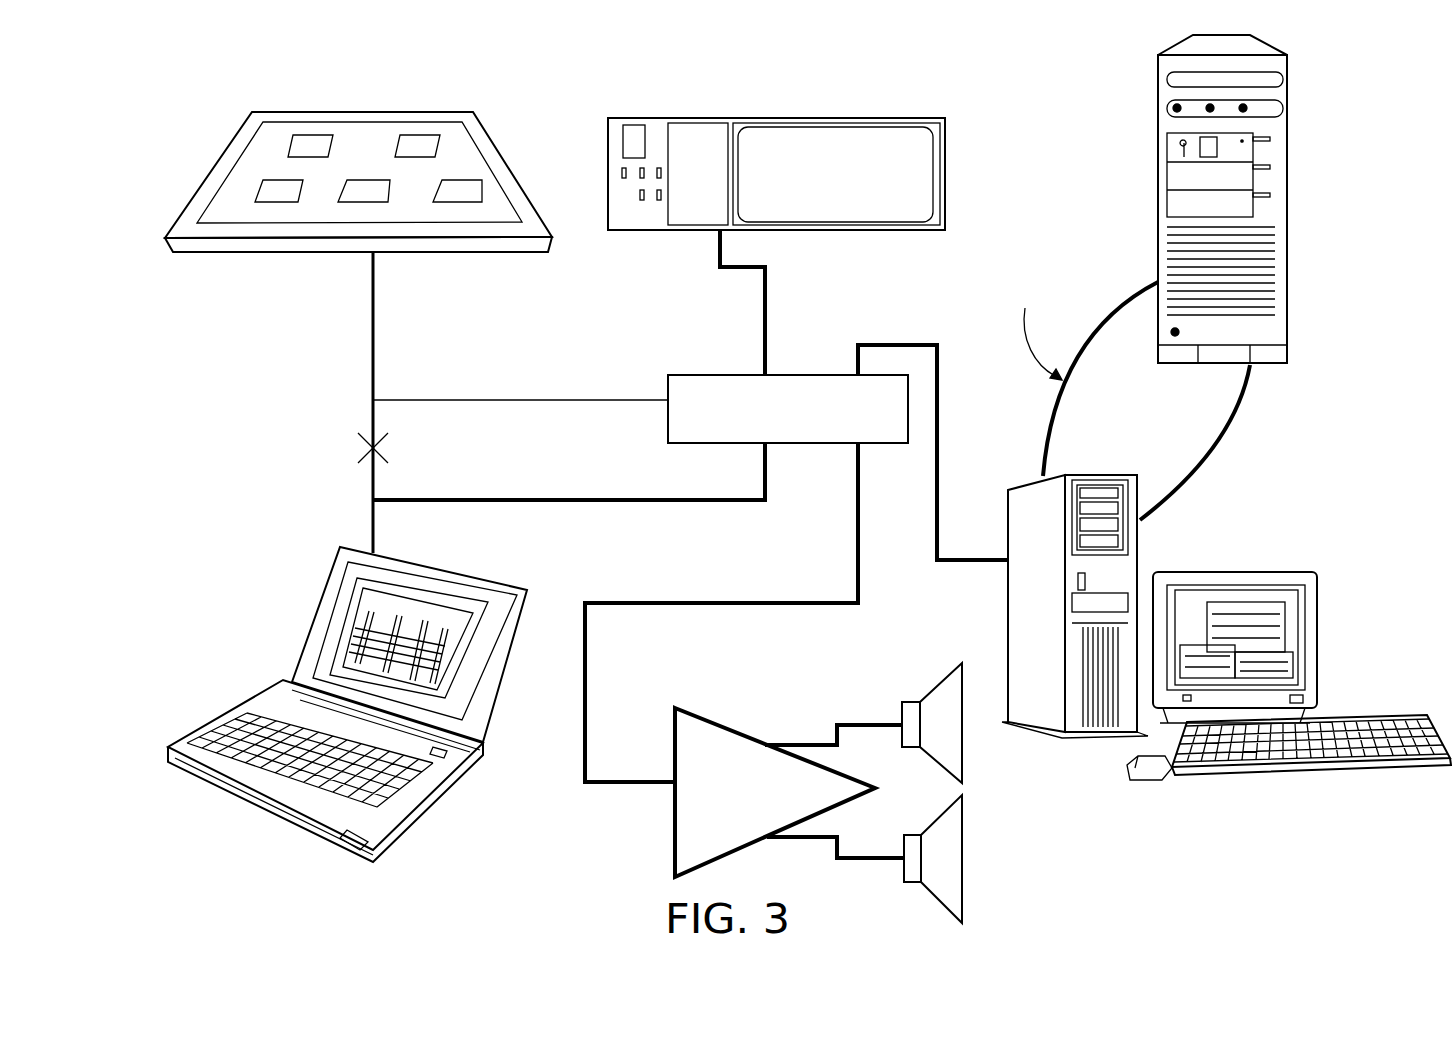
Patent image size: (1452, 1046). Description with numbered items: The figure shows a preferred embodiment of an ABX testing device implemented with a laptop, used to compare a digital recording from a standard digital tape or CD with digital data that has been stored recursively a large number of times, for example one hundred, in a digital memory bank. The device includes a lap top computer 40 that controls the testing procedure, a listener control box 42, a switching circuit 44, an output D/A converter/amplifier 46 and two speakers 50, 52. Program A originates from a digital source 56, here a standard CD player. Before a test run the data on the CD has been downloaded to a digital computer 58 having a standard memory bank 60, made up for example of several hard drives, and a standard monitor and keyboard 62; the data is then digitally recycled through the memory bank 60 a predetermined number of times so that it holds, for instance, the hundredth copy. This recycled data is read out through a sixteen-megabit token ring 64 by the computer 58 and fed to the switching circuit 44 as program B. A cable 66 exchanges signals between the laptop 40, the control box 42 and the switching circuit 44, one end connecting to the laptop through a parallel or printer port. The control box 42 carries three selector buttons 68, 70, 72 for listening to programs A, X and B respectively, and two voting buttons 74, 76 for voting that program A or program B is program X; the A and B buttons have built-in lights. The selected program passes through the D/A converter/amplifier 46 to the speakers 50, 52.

The lap top computer 40 is at (495, 578).
The listener control box 42 is at (371, 214).
The switching circuit 44 is at (705, 375).
The output D/A converter/amplifier 46 is at (710, 723).
The speaker 50 is at (962, 753).
The speaker 52 is at (962, 868).
The digital source 56 is at (845, 186).
The digital computer 58 is at (1090, 475).
The memory bank 60 is at (1287, 293).
The monitor and keyboard 62 is at (1248, 572).
The 16M token ring 64 is at (1133, 298).
The cable 66 is at (356, 523).
The selector button 68 is at (258, 182).
The selector button 70 is at (357, 202).
The selector button 72 is at (480, 187).
The voting button 74 is at (337, 142).
The voting button 76 is at (442, 150).